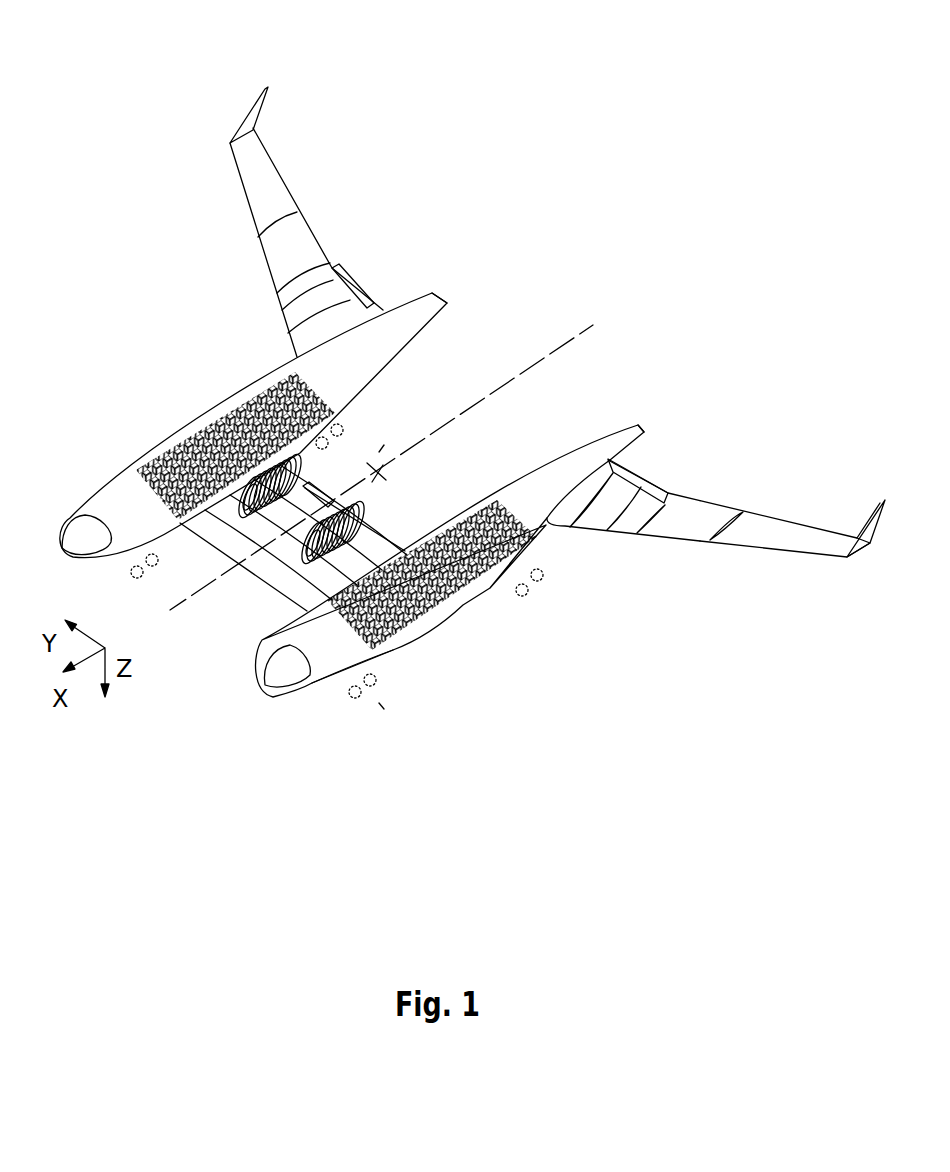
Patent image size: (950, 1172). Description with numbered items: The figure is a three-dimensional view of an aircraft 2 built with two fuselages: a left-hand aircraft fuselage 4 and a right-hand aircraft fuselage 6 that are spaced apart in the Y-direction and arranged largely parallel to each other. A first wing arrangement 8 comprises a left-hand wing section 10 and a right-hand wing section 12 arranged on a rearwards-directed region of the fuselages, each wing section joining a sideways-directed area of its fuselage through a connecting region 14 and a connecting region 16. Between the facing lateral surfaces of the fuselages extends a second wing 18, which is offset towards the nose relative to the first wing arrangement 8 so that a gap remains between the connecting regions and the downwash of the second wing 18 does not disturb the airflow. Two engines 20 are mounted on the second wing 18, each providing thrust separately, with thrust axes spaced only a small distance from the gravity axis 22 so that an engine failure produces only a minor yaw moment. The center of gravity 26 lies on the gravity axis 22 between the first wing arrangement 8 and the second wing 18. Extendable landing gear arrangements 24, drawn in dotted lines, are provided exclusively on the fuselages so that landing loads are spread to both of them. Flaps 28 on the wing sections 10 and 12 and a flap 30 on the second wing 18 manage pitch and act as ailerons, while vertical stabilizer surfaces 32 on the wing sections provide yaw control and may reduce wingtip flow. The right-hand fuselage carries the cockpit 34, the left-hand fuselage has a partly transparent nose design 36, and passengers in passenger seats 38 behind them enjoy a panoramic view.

The aircraft 2 is at (558, 231).
The left-hand aircraft fuselage 4 is at (463, 604).
The right-hand aircraft fuselage 6 is at (160, 447).
The first wing arrangement 8 is at (712, 457).
The left-hand wing section 10 is at (775, 535).
The right-hand wing section 12 is at (278, 206).
The connecting region 14 is at (645, 430).
The connecting region 16 is at (380, 302).
The second wing 18 is at (233, 562).
The engines 20 is at (293, 463).
The gravity axis 22 is at (523, 370).
The extendable landing gear arrangements 24 is at (386, 714).
The center of gravity 26 is at (387, 443).
The flaps 28 is at (353, 283).
The flap 30 is at (317, 497).
The vertical stabilizer surfaces 32 is at (242, 102).
The cockpit 34 is at (79, 536).
The nose design 36 is at (280, 675).
The passenger seats 38 is at (393, 649).